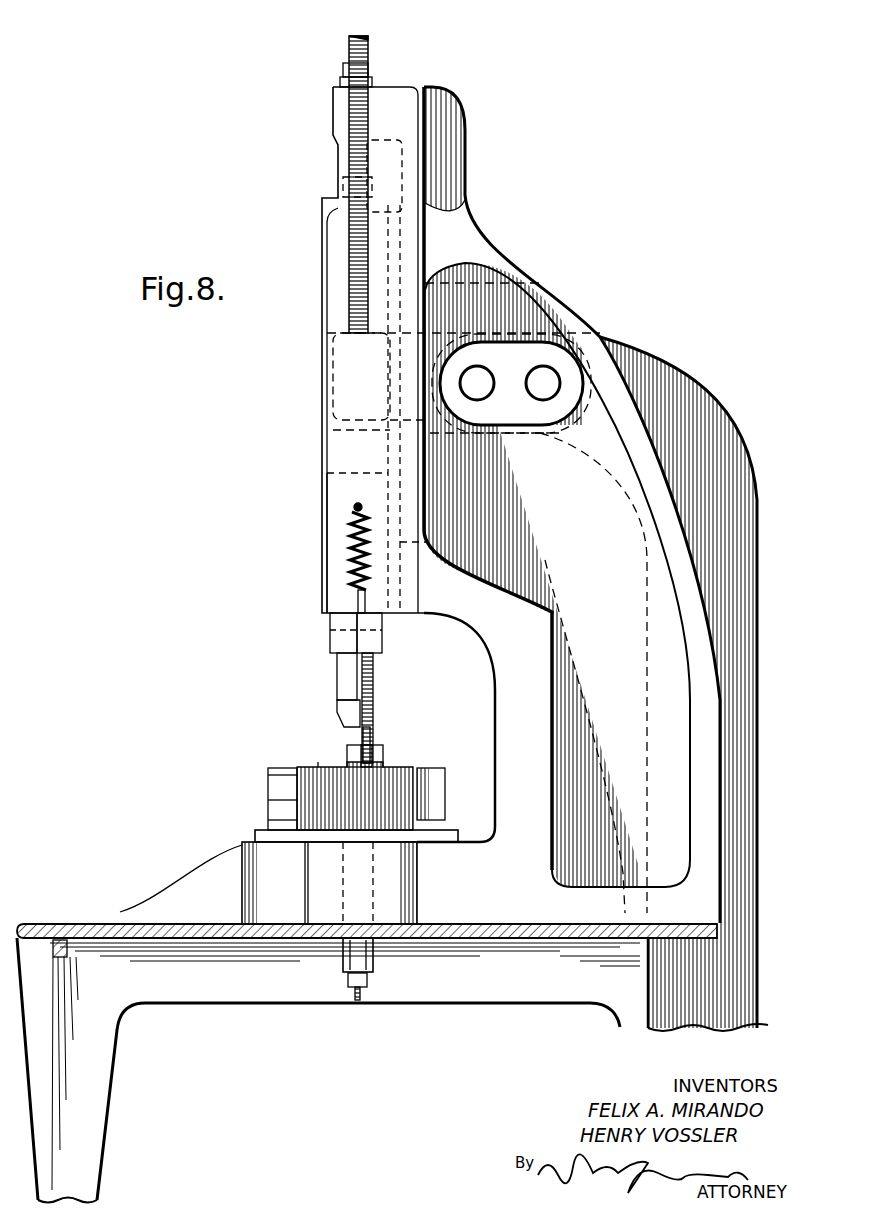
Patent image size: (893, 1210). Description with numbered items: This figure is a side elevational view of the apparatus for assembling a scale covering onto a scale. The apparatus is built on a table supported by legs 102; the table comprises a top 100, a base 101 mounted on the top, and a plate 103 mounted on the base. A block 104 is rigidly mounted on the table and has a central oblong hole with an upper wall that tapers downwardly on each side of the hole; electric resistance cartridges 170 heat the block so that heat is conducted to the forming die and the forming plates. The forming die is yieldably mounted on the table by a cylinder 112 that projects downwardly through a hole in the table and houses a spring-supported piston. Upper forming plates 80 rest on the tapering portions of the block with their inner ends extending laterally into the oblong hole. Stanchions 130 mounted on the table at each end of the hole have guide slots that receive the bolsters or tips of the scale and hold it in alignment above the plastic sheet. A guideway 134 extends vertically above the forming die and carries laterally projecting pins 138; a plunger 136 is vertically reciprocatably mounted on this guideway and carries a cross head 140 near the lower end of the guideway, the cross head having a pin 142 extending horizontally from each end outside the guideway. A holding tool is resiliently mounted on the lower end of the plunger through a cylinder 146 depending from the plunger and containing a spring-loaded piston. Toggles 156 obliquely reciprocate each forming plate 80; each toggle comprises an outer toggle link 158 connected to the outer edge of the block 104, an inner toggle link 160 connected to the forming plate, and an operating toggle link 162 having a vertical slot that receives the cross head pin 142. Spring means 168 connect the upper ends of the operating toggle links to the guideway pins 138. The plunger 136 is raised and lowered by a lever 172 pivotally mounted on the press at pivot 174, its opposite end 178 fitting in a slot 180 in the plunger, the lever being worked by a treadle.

The upper forming plates 80 is at (388, 763).
The top 100 is at (212, 935).
The base 101 is at (250, 880).
The legs 102 is at (97, 1088).
The plate 103 is at (253, 834).
The block 104 is at (298, 783).
The cylinder 112 is at (374, 968).
The stanchions 130 is at (277, 773).
The guideway 134 is at (338, 487).
The plunger 136 is at (322, 445).
The pins 138 is at (355, 510).
The cross head 140 is at (340, 643).
The pin 142 is at (380, 637).
The cylinder 146 is at (345, 665).
The toggles 156 is at (373, 718).
The outer toggle link 158 is at (372, 733).
The inner toggle link 160 is at (352, 715).
The operating toggle link 162 is at (373, 665).
The spring means 168 is at (350, 543).
The electric resistance cartridges 170 is at (312, 802).
The lever 172 is at (653, 377).
The pivot 174 is at (480, 377).
The opposite end of lever 178 is at (333, 373).
The slot 180 is at (337, 430).